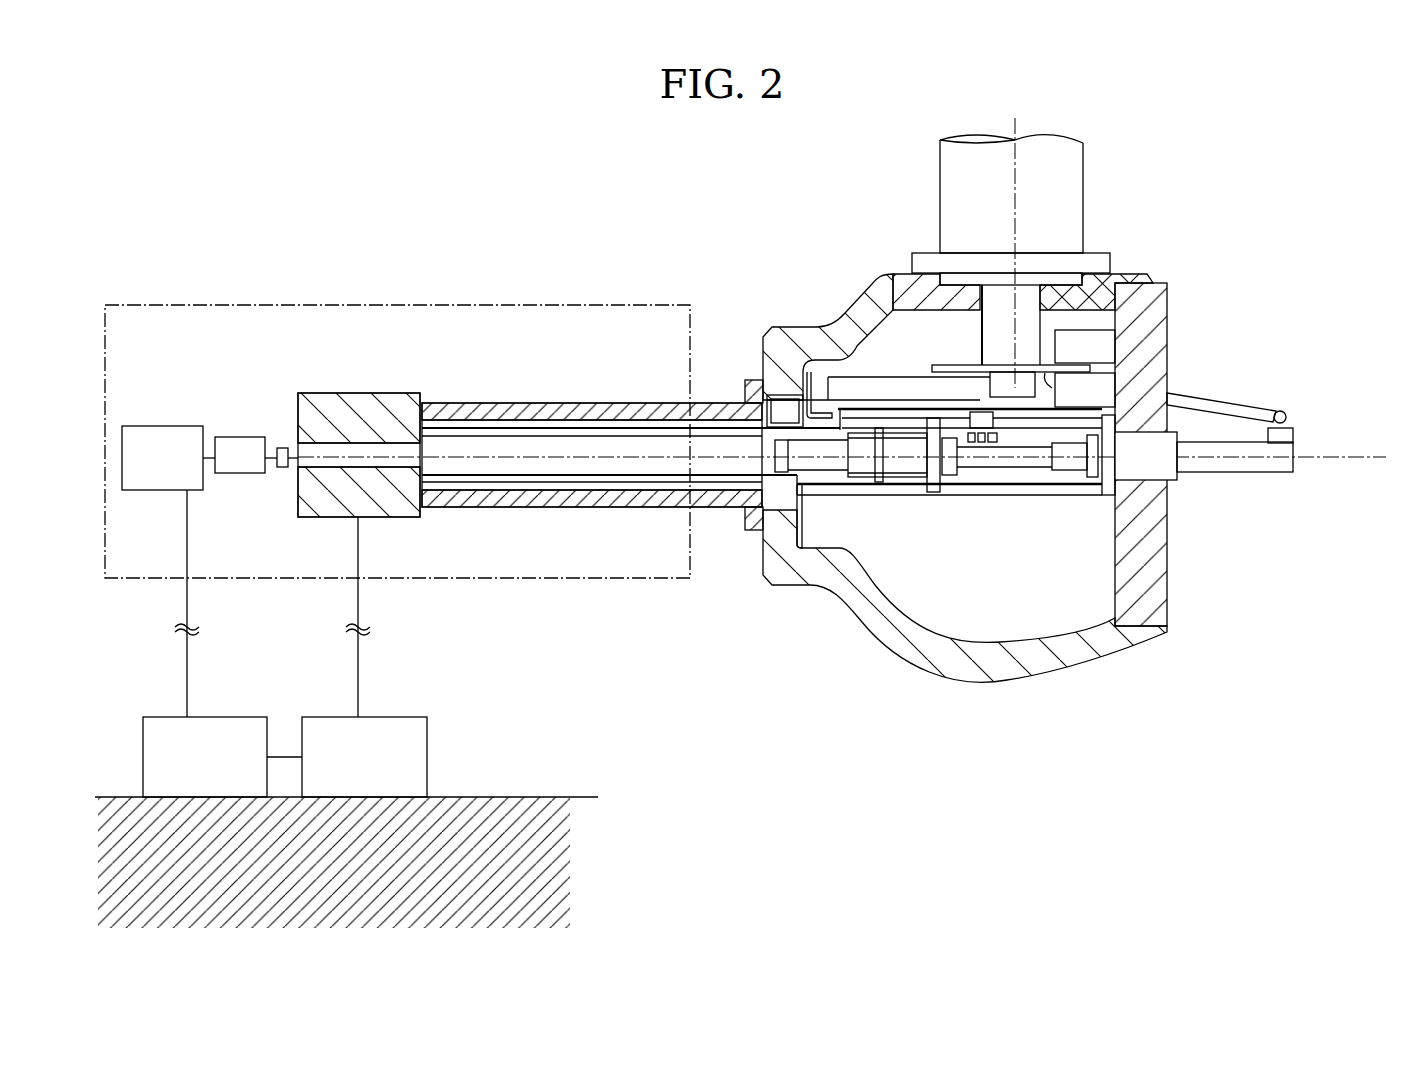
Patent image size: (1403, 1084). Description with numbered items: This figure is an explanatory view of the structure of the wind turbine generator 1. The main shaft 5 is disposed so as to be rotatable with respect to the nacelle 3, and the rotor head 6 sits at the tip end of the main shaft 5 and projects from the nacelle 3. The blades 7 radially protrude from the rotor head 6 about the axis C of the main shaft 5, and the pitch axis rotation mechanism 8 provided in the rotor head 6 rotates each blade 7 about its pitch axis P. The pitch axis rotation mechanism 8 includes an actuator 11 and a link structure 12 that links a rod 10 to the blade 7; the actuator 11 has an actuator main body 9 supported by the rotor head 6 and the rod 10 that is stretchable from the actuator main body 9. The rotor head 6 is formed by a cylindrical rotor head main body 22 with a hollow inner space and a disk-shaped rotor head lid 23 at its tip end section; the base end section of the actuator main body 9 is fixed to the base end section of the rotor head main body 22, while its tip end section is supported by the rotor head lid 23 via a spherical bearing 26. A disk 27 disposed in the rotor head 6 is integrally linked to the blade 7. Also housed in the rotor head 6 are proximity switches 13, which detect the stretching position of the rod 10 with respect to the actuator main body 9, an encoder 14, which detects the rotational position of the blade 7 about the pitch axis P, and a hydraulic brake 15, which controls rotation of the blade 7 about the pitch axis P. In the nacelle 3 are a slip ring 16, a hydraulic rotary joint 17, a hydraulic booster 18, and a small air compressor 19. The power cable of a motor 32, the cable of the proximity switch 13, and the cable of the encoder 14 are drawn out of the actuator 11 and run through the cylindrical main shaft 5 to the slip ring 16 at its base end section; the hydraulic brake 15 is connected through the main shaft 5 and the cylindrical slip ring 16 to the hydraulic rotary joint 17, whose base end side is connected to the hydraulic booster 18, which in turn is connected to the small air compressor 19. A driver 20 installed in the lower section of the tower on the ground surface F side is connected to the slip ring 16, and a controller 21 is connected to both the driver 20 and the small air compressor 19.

The wind turbine generator 1 is at (1163, 130).
The nacelle 3 is at (632, 305).
The main shaft 5 is at (540, 403).
The rotor head 6 is at (853, 297).
The blade 7 is at (1085, 178).
The pitch axis rotation mechanism 8 is at (1022, 525).
The actuator main body 9 is at (1065, 488).
The rod 10 is at (1213, 478).
The actuator 11 is at (1046, 450).
The link structure 12 is at (1205, 385).
The proximity switch 13 is at (991, 442).
The encoder 14 is at (1040, 372).
The hydraulic brake 15 is at (1100, 345).
The slip ring 16 is at (355, 410).
The hydraulic rotary joint 17 is at (282, 450).
The hydraulic booster 18 is at (238, 447).
The small air compressor 19 is at (158, 440).
The driver 20 is at (400, 730).
The controller 21 is at (160, 735).
The rotor head main body 22 is at (1055, 655).
The rotor head lid 23 is at (1150, 580).
The spherical bearing 26 is at (1140, 435).
The disk 27 is at (940, 360).
The motor 32 is at (813, 465).
The pitch axis P is at (1018, 118).
The axis of the main shaft C is at (1330, 450).
The ground surface F is at (512, 797).